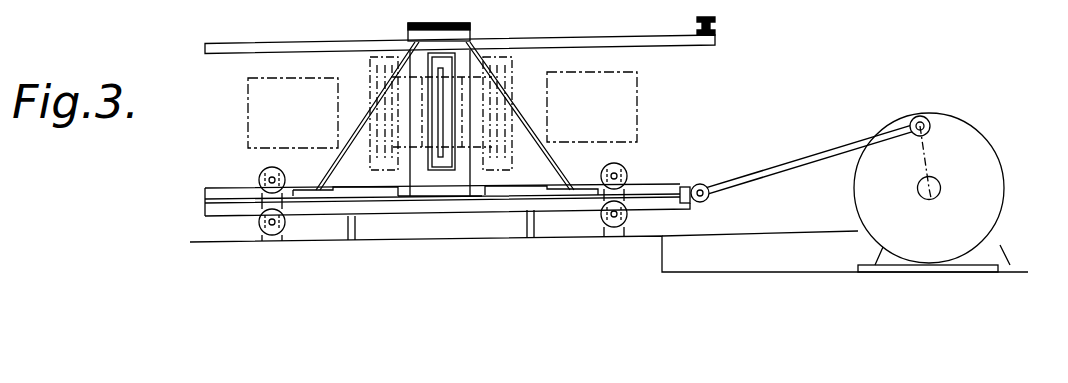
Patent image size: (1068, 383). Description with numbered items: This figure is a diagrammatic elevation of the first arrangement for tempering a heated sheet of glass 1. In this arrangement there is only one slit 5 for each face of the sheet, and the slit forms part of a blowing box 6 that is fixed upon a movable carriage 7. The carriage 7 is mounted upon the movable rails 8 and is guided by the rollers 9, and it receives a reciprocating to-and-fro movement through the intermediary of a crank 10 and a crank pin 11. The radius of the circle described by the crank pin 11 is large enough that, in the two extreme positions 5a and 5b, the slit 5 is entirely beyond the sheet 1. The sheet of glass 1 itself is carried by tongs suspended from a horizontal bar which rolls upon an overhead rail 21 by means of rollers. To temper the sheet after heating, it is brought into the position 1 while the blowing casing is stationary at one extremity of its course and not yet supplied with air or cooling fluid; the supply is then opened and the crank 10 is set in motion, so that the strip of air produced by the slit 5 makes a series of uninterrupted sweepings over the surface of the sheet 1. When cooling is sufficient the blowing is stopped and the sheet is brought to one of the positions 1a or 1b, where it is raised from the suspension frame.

The sheet of glass 1 is at (393, 116).
The sheet position 1a is at (293, 113).
The sheet position 1b is at (592, 107).
The slit 5 is at (440, 110).
The extreme slit position 5a is at (380, 62).
The extreme slit position 5b is at (504, 62).
The blowing box 6 is at (450, 120).
The movable carriage 7 is at (423, 193).
The movable rails 8 is at (212, 188).
The rollers 9 is at (285, 176).
The crank 10 is at (757, 173).
The crank pin 11 is at (927, 130).
The rail 21 is at (614, 38).